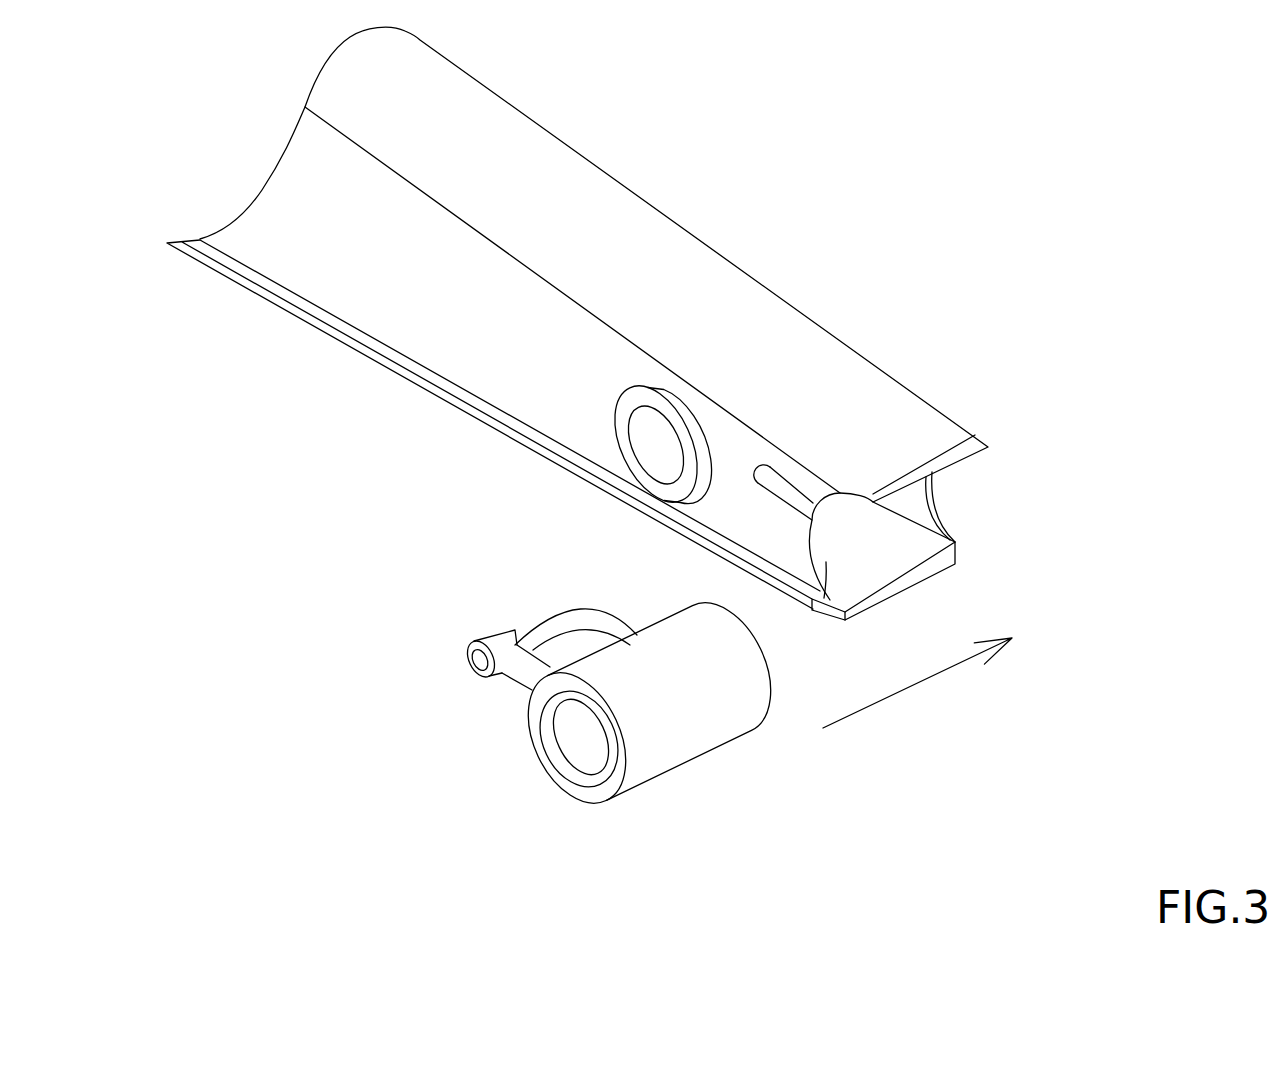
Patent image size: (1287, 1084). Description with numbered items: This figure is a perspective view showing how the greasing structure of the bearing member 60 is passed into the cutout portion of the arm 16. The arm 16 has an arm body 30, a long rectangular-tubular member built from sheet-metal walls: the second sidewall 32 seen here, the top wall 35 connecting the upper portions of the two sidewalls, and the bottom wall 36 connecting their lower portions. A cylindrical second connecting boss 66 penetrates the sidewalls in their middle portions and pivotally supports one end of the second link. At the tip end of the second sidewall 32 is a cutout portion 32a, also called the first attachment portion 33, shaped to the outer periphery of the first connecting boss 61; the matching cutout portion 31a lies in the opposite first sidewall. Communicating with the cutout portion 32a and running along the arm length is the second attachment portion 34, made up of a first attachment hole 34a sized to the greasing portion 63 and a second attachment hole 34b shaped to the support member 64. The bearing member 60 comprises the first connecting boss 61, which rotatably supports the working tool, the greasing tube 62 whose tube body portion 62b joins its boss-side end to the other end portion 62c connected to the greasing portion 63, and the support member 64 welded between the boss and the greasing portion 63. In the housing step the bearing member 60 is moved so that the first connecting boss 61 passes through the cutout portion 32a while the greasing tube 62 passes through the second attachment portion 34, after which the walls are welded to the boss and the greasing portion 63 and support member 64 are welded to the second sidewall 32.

The arm 16 is at (825, 64).
The arm body 30 is at (773, 179).
The cutout portion 31a is at (953, 497).
The second sidewall 32 is at (497, 393).
The cutout portion 32a is at (845, 536).
The first attachment portion 33 is at (824, 598).
The second attachment portion 34 is at (775, 454).
The first attachment hole 34a is at (756, 465).
The second attachment hole 34b is at (800, 502).
The top wall 35 is at (750, 295).
The bottom wall 36 is at (957, 567).
The bearing member 60 is at (744, 766).
The first connecting boss 61 is at (532, 747).
The greasing tube 62 is at (605, 587).
The tube body portion 62b is at (580, 607).
The other end portion 62c is at (490, 628).
The greasing portion 63 is at (483, 634).
The support member 64 is at (505, 680).
The second connecting boss 66 is at (628, 385).